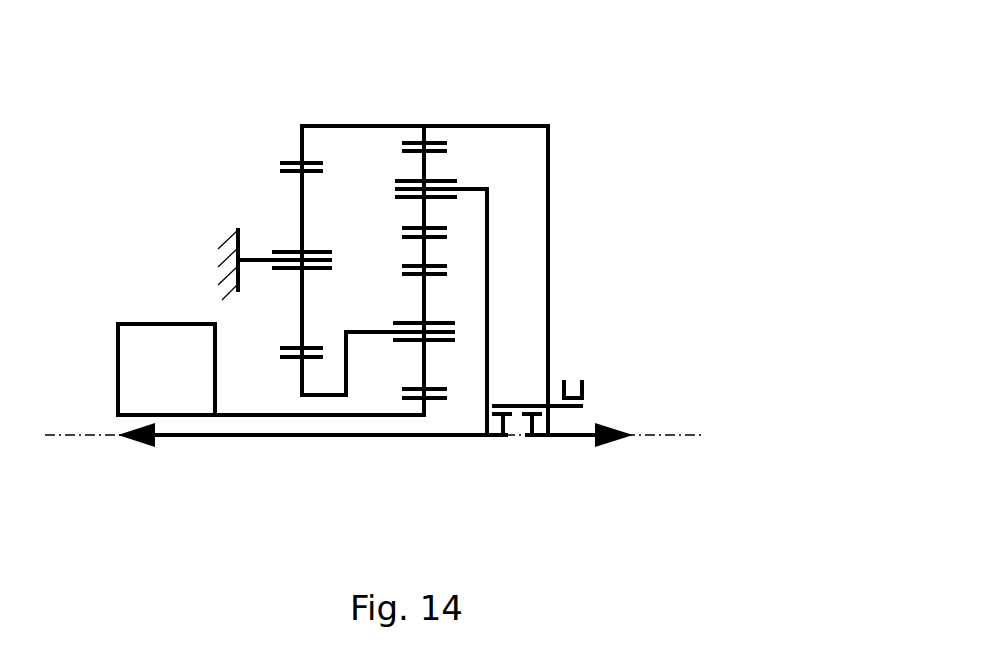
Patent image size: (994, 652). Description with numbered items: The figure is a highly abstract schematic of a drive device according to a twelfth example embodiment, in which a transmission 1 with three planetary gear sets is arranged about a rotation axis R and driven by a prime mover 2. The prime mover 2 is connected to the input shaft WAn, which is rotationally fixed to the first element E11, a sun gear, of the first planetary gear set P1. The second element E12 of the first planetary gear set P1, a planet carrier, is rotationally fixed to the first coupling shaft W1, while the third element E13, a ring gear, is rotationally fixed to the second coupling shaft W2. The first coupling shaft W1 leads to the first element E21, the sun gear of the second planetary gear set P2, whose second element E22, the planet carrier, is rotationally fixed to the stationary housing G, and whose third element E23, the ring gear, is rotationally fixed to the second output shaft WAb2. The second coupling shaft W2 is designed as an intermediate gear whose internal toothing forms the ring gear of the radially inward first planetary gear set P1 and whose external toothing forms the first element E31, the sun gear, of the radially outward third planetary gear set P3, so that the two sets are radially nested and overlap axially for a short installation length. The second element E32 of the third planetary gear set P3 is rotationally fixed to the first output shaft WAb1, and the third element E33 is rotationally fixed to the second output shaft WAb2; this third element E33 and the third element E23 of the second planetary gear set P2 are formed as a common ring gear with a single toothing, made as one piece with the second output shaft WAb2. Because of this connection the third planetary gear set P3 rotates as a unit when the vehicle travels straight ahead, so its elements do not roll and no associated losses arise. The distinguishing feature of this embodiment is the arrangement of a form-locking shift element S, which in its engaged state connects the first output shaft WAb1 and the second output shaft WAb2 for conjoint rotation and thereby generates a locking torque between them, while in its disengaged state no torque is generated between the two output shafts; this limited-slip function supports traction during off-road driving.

The transmission 1 is at (150, 133).
The prime mover 2 is at (125, 324).
The housing G is at (226, 237).
The rotation axis R is at (675, 437).
The shift element S is at (599, 393).
The first planetary gear set P1 is at (445, 443).
The second planetary gear set P2 is at (288, 445).
The third planetary gear set P3 is at (447, 118).
The first coupling shaft W1 is at (350, 343).
The second coupling shaft W2 is at (418, 252).
The input shaft WAn is at (232, 418).
The first output shaft WAb1 is at (187, 440).
The second output shaft WAb2 is at (575, 437).
The first element of the first planetary gear set E11 is at (423, 418).
The second element of the first planetary gear set E12 is at (385, 330).
The third element of the first planetary gear set E13 is at (448, 269).
The first element of the second planetary gear set E21 is at (300, 368).
The second element of the second planetary gear set E22 is at (263, 258).
The third element of the second planetary gear set E23 is at (290, 163).
The first element of the third planetary gear set E31 is at (448, 237).
The second element of the third planetary gear set E32 is at (465, 188).
The third element of the third planetary gear set E33 is at (415, 140).